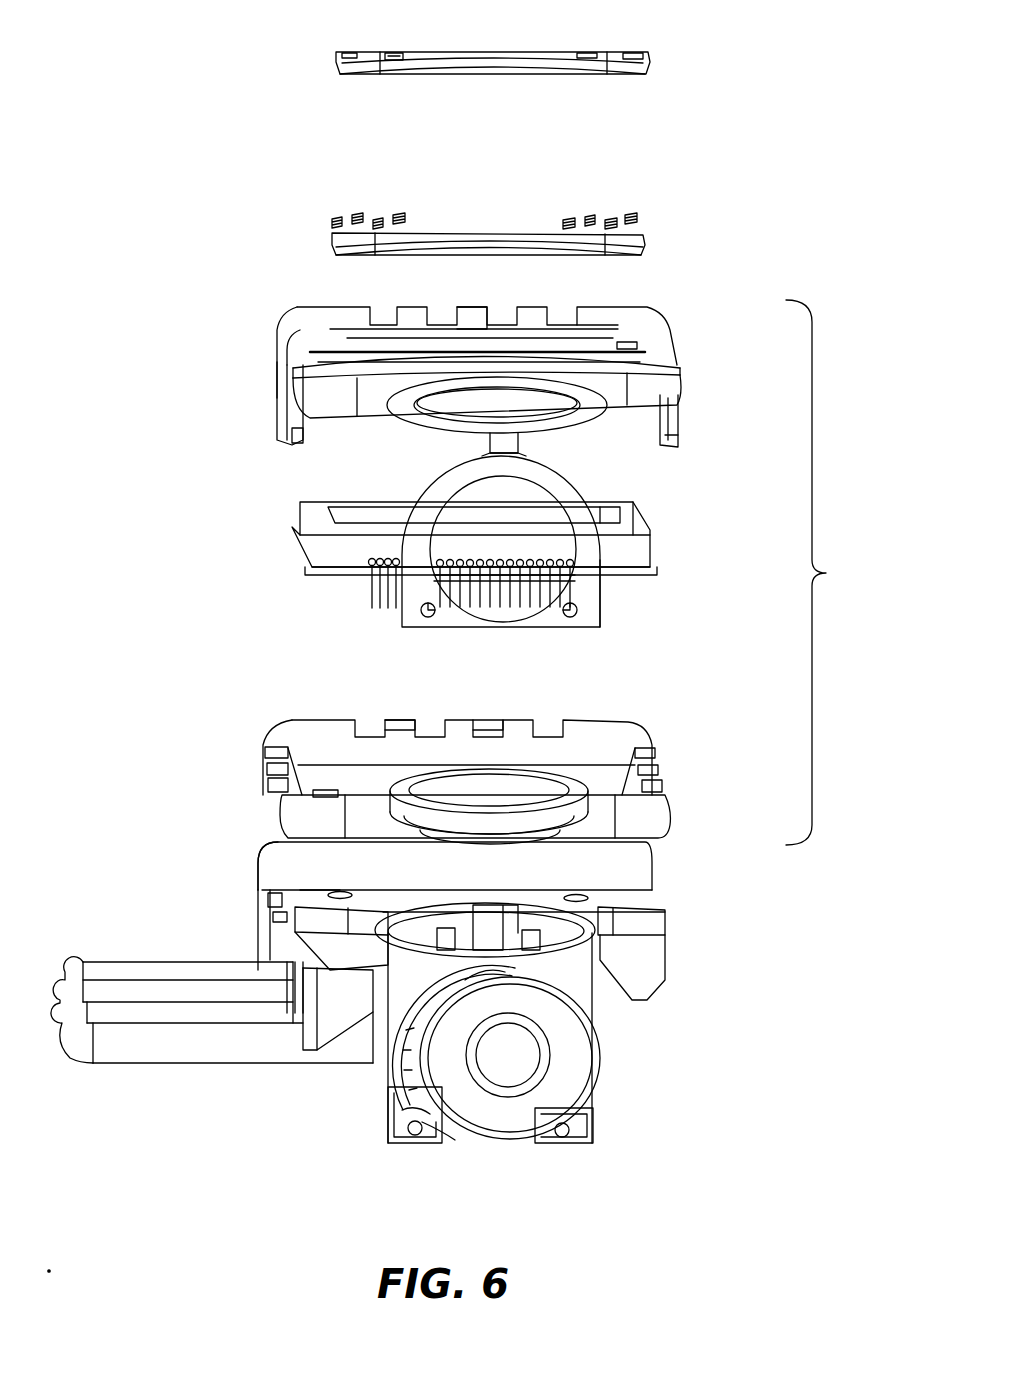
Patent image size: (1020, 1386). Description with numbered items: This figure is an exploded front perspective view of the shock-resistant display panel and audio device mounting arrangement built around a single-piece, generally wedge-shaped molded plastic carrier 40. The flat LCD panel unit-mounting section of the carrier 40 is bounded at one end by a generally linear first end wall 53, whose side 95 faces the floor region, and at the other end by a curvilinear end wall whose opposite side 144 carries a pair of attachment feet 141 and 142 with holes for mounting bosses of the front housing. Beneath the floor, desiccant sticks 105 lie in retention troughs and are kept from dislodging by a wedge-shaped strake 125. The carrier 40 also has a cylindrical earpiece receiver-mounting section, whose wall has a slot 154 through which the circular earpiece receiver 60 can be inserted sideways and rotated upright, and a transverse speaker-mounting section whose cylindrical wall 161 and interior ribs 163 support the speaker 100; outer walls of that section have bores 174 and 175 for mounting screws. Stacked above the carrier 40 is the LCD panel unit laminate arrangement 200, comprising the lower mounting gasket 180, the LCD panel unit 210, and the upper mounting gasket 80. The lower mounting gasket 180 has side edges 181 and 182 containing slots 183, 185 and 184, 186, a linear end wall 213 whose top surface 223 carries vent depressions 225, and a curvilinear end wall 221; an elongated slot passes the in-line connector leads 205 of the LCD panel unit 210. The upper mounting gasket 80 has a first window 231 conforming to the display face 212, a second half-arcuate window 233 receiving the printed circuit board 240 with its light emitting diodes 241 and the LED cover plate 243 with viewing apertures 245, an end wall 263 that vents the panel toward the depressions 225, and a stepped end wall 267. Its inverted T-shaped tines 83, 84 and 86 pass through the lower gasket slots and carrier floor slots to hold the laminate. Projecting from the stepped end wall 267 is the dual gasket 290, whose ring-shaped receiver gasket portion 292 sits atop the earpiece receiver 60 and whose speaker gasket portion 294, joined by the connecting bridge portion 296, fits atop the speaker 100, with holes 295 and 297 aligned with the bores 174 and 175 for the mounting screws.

The carrier 40 is at (674, 873).
The first end wall 53 is at (260, 853).
The earpiece receiver 60 is at (575, 775).
The upper mounting gasket 80 is at (282, 305).
The inverted T-shaped tine 83 is at (272, 376).
The inverted T-shaped tine 84 is at (278, 422).
The inverted T-shaped tine 86 is at (684, 418).
The side of end wall 95 is at (355, 866).
The speaker 100 is at (600, 1082).
The desiccant sticks 105 is at (124, 1052).
The wedge-shaped strake 125 is at (290, 970).
The attachment foot 141 is at (362, 965).
The attachment foot 142 is at (660, 960).
The side of curvilinear end wall 144 is at (318, 912).
The slot 154 is at (492, 920).
The cylindrical wall 161 is at (445, 1130).
The interior ribs 163 is at (410, 1065).
The bore 174 is at (416, 1136).
The bore 175 is at (563, 1140).
The lower mounting gasket 180 is at (262, 726).
The side edge 181 is at (264, 775).
The side edge 182 is at (660, 768).
The slot 183 is at (262, 754).
The slot 184 is at (660, 746).
The slot 185 is at (264, 795).
The slot 186 is at (668, 788).
The LCD panel unit laminate arrangement 200 is at (829, 572).
The in-line connector leads 205 is at (366, 600).
The LCD panel unit 210 is at (296, 512).
The display face 212 is at (349, 512).
The first end wall 213 is at (310, 700).
The second end wall 221 is at (663, 816).
The top surface 223 is at (397, 718).
The depressions 225 is at (480, 720).
The first window 231 is at (604, 318).
The second window 233 is at (640, 347).
The printed circuit board 240 is at (645, 247).
The light emitting diodes 241 is at (631, 213).
The LED cover plate 243 is at (622, 76).
The viewing apertures 245 is at (394, 52).
The end wall 263 is at (465, 306).
The stepped end wall 267 is at (660, 380).
The dual gasket 290 is at (596, 493).
The receiver gasket portion 292 is at (592, 426).
The speaker gasket portion 294 is at (603, 598).
The hole 295 is at (428, 618).
The connecting bridge portion 296 is at (488, 436).
The hole 297 is at (569, 618).